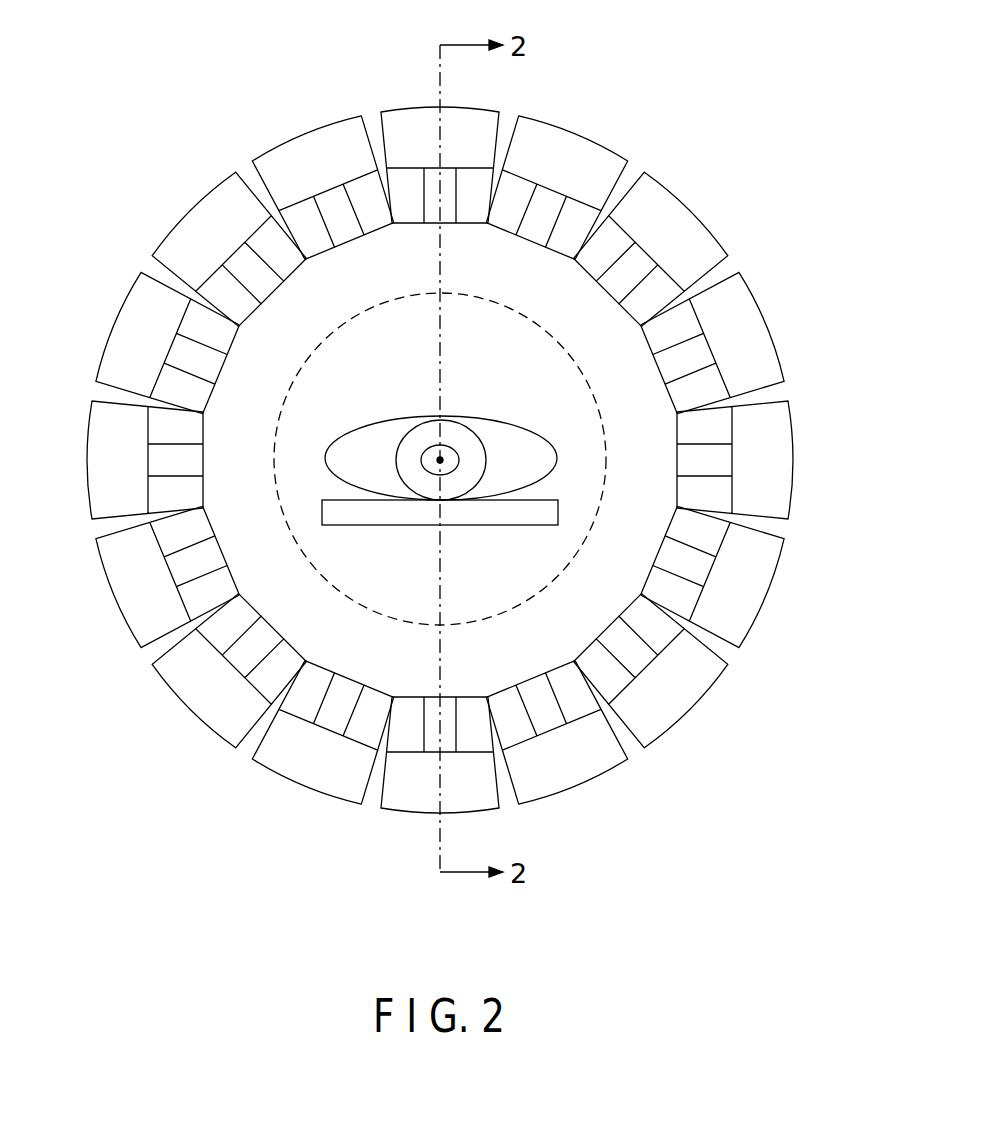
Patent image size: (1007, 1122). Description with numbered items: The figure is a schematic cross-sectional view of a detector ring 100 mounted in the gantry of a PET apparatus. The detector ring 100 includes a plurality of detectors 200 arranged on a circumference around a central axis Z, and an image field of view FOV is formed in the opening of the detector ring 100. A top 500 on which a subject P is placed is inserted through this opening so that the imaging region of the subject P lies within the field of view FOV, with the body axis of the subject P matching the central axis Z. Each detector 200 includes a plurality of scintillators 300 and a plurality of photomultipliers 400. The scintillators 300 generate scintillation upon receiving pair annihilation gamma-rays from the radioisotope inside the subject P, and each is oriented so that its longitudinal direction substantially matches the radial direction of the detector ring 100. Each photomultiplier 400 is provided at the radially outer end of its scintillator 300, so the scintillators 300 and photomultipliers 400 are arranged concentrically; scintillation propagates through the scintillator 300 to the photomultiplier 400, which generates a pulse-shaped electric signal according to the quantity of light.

The detector ring 100 is at (694, 163).
The detector 200 is at (672, 840).
The scintillator 300 is at (517, 727).
The photomultiplier 400 is at (608, 757).
The top 500 is at (355, 517).
The subject P is at (362, 438).
The central axis Z is at (441, 459).
The image field of view FOV is at (368, 587).